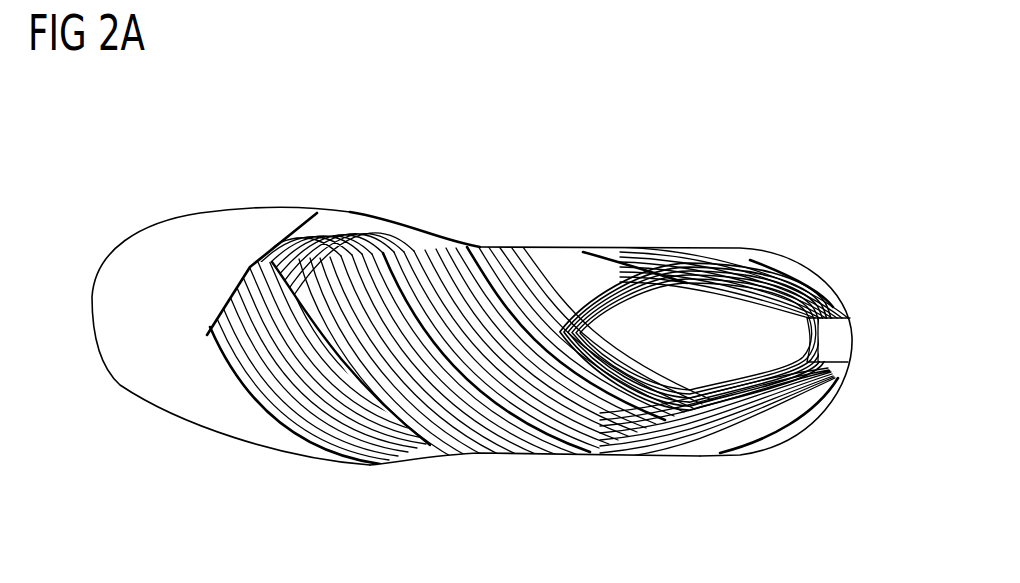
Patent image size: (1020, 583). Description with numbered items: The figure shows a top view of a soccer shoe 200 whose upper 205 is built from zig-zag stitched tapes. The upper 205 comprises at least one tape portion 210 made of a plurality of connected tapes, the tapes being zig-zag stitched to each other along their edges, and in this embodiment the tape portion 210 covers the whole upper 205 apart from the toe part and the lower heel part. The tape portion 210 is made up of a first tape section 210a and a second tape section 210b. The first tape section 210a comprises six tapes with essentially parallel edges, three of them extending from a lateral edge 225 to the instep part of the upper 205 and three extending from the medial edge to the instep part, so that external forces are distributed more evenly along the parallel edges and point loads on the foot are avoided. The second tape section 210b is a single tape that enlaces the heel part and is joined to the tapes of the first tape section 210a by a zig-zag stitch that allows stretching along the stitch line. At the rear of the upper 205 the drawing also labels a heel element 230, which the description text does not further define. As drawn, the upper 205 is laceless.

The soccer shoe 200 is at (185, 185).
The upper 205 is at (128, 300).
The tape portion 210 is at (247, 265).
The first tape section 210a is at (521, 262).
The second tape section 210b is at (754, 415).
The lateral edge 225 is at (592, 456).
The heel tab 230 is at (840, 342).